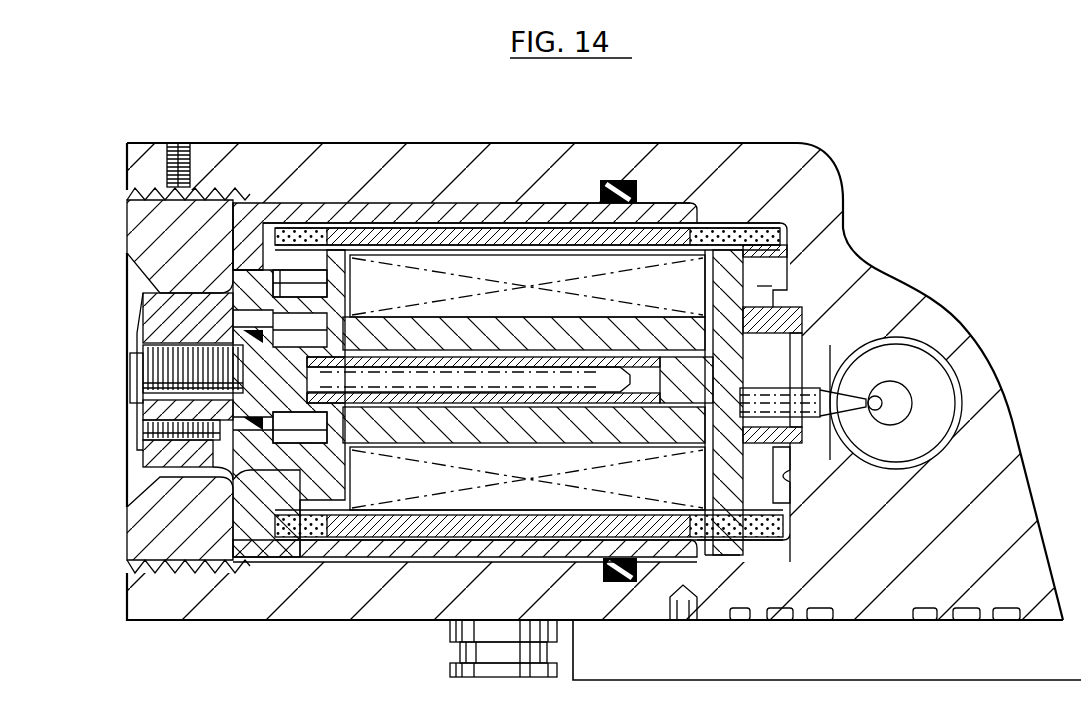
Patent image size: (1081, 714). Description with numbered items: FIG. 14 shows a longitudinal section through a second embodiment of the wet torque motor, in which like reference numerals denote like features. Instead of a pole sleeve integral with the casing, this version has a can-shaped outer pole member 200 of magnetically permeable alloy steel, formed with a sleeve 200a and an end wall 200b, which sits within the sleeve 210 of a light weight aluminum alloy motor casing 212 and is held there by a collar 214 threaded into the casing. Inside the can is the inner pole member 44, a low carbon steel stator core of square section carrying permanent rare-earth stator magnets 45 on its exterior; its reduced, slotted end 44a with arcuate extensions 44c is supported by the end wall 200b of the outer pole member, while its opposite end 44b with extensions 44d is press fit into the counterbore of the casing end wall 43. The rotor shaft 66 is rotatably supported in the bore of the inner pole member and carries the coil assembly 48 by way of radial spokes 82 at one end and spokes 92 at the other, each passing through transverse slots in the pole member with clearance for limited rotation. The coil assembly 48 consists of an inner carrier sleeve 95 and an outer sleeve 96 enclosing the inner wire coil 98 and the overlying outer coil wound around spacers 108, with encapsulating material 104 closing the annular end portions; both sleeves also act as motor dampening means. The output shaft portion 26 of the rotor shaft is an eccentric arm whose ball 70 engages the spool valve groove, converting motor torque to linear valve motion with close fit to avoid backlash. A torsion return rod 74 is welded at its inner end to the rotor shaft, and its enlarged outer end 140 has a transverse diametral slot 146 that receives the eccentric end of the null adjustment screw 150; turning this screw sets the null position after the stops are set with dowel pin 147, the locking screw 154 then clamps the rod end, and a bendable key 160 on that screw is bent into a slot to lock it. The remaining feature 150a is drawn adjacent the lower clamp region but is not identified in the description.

The sleeve 210 is at (453, 145).
The motor casing 212 is at (850, 217).
The collar 214 is at (127, 207).
The outer pole member 200 is at (326, 195).
The sleeve 200a is at (572, 203).
The end wall 200b is at (250, 200).
The outer cylindrical tubular sleeve 96 is at (648, 245).
The inner cylindrical tubular carrier sleeve 95 is at (663, 236).
The coil assembly 48 is at (725, 224).
The inner wire coil 98 is at (758, 226).
The posts or spacers 108 is at (510, 527).
The permanent rare-earth stator magnets 45 is at (421, 257).
The inner pole member 44 is at (520, 323).
The output shaft portion 26 is at (705, 432).
The rotor shaft 66 is at (662, 365).
The torsion return rod 74 is at (520, 380).
The end of inner pole member 44a is at (320, 309).
The dowel pin 147 is at (273, 278).
The spokes or arms 82 is at (335, 490).
The extensions 44c is at (297, 420).
The transverse diametral slot 146 is at (170, 298).
The bendable keys 160 is at (147, 330).
The locking screw 154 is at (160, 352).
The outer end of torsion return rod 140 is at (243, 400).
The null adjustment screw 150 is at (222, 424).
The lower clamp block 150a is at (222, 437).
The encapsulating material 104 is at (792, 225).
The end of inner pole member 44b is at (797, 303).
The extensions 44d is at (803, 322).
The casing end wall 43 is at (773, 482).
The spokes or arms 92 is at (727, 493).
The ball 70 is at (872, 408).